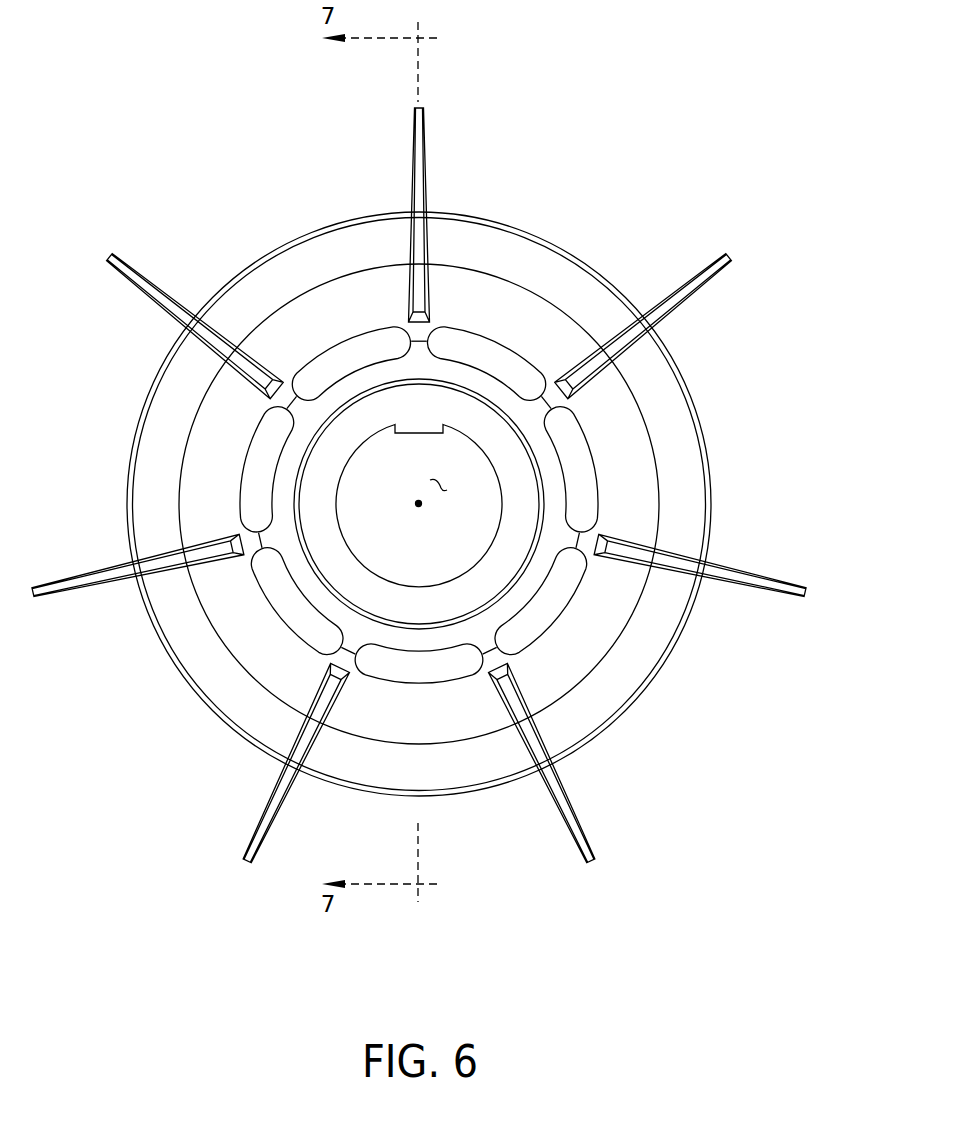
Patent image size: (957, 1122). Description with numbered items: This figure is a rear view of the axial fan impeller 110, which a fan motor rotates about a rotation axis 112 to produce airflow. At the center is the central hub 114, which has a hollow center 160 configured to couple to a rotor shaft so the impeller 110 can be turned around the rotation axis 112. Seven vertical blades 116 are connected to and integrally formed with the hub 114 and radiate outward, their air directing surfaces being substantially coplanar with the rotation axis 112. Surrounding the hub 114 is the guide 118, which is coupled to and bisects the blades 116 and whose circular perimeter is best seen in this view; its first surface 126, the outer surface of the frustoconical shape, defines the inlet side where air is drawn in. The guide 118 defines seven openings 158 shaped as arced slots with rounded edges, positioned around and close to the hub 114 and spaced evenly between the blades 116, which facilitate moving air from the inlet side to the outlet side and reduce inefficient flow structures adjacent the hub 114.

The impeller 110 is at (592, 191).
The rotation axis 112 is at (418, 503).
The central hub 114 is at (527, 470).
The vertical blades 116 is at (706, 265).
The guide 118 is at (393, 767).
The first surface 126 is at (472, 757).
The openings 158 is at (542, 605).
The hollow center 160 is at (443, 480).